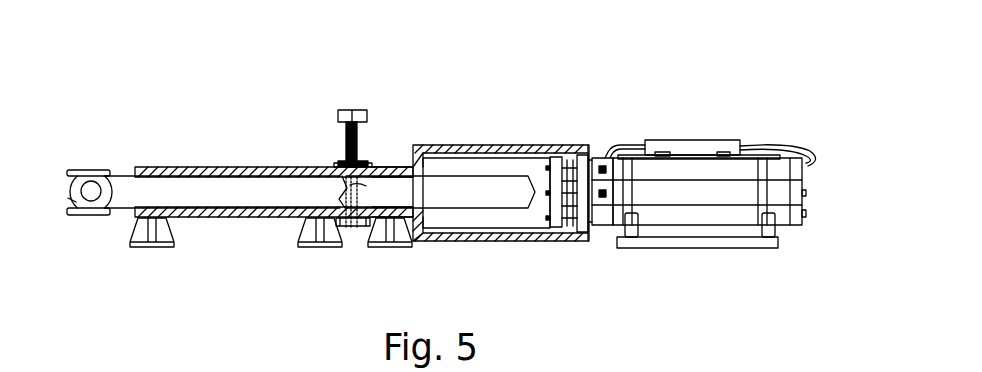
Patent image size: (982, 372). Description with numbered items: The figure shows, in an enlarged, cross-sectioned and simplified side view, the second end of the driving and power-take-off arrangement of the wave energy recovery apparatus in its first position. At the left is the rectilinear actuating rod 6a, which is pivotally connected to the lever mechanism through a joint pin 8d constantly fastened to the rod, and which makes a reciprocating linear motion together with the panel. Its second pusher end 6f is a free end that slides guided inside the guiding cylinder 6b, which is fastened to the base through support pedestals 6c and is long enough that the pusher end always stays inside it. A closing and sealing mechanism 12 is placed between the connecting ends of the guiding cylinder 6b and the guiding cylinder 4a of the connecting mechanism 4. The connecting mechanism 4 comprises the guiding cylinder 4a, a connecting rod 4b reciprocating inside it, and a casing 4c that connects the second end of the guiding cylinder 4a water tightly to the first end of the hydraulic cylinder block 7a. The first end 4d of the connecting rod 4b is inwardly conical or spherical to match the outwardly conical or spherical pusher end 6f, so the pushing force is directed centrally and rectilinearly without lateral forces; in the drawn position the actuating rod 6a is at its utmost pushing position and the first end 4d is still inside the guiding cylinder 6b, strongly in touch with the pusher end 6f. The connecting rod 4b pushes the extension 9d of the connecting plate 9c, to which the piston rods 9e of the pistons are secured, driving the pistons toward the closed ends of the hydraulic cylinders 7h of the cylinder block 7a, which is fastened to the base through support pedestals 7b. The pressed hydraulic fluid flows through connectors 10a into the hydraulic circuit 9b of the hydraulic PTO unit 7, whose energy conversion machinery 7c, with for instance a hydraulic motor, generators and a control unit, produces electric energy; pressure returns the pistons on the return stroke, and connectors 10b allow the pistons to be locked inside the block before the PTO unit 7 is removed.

The connecting mechanism 4 is at (495, 105).
The guiding cylinder 4a is at (377, 167).
The connecting rod 4b is at (460, 241).
The casing 4c is at (468, 145).
The first end of the connecting rod 4d is at (341, 190).
The actuating rod 6a is at (125, 182).
The guiding cylinder 6b is at (222, 170).
The support pedestals 6c is at (168, 232).
The second pusher end 6f is at (350, 187).
The hydraulic PTO unit 7 is at (683, 93).
The hydraulic cylinder block 7a is at (698, 257).
The support pedestals 7b is at (767, 248).
The energy conversion machinery 7c is at (710, 145).
The hydraulic cylinders 7h is at (667, 193).
The joint pin 8d is at (90, 198).
The hydraulic circuit 9b is at (622, 145).
The connecting plate 9c is at (555, 228).
The extension of the connecting plate 9d is at (537, 173).
The piston rods 9e is at (573, 229).
The connectors 10a is at (825, 167).
The connectors 10b is at (600, 145).
The closing and sealing mechanism 12 is at (330, 103).